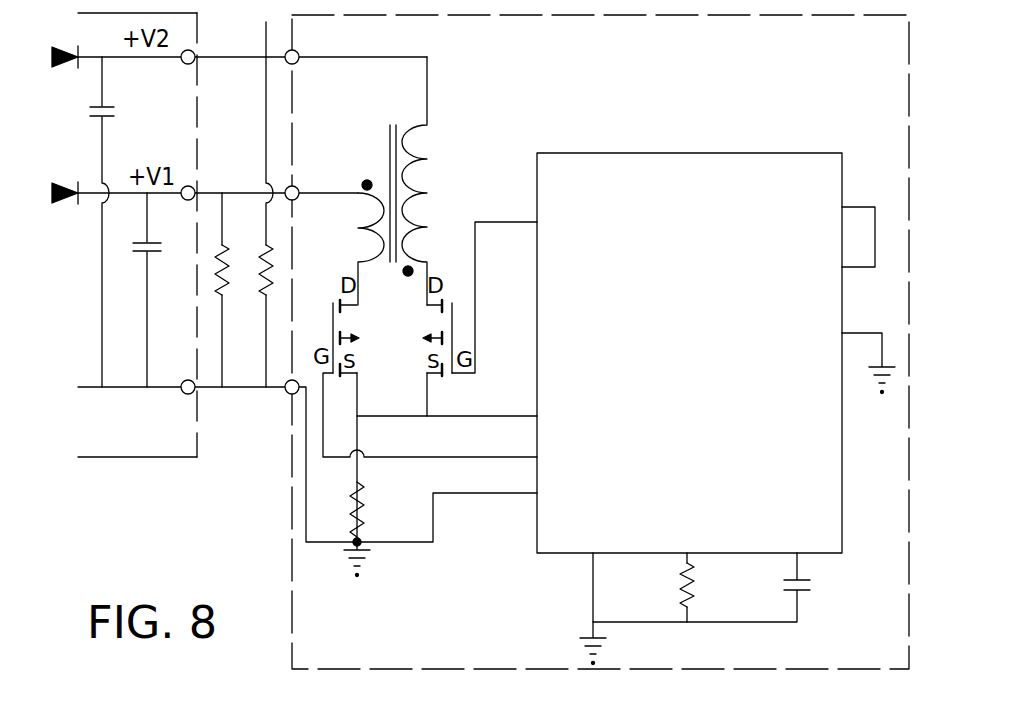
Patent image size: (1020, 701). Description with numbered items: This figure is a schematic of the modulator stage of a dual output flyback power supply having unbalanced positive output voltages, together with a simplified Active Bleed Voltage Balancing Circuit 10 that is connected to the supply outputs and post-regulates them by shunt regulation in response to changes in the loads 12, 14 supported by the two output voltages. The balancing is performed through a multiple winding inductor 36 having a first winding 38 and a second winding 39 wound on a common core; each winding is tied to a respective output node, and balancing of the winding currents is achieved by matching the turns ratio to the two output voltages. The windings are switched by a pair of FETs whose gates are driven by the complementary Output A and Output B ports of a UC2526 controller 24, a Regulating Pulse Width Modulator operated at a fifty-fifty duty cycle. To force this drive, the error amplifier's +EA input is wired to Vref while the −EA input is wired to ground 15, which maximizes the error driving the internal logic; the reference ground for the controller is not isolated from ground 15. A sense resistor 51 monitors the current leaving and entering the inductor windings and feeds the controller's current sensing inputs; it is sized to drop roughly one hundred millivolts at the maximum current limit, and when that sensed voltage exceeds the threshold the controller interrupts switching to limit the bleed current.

The Active Bleed Voltage Balancing Circuit 10 is at (898, 76).
The load 12 is at (222, 250).
The load 14 is at (264, 251).
The ground 15 is at (183, 396).
The UC2526 controller 24 is at (692, 282).
The multiple winding inductor 36 is at (446, 177).
The first winding 38 is at (382, 254).
The second winding 39 is at (404, 214).
The sense resistor 51 is at (348, 500).